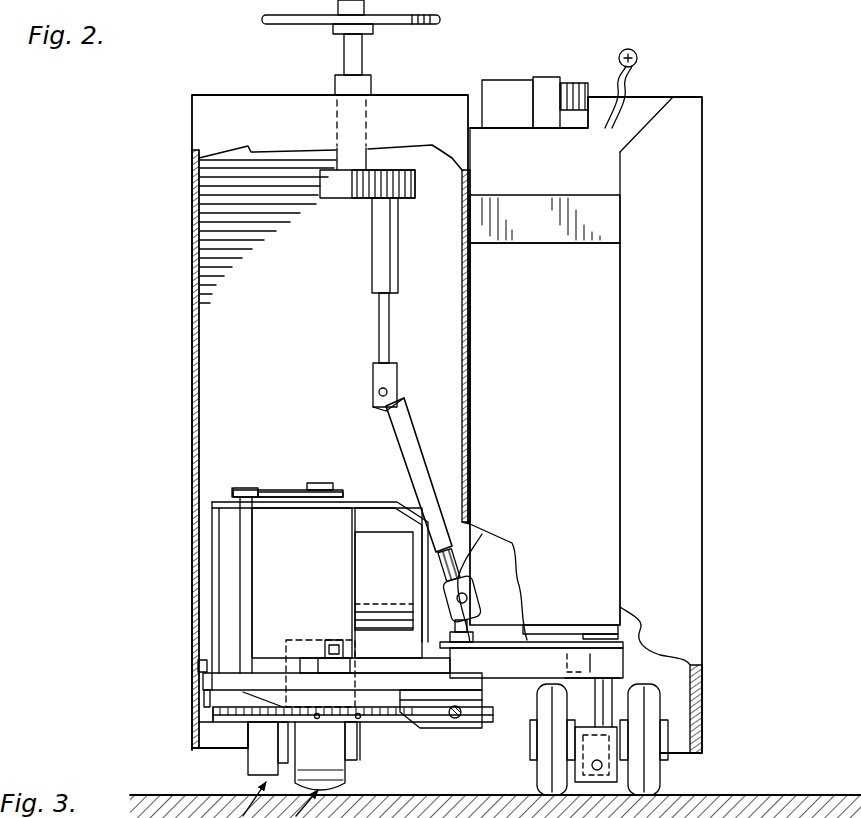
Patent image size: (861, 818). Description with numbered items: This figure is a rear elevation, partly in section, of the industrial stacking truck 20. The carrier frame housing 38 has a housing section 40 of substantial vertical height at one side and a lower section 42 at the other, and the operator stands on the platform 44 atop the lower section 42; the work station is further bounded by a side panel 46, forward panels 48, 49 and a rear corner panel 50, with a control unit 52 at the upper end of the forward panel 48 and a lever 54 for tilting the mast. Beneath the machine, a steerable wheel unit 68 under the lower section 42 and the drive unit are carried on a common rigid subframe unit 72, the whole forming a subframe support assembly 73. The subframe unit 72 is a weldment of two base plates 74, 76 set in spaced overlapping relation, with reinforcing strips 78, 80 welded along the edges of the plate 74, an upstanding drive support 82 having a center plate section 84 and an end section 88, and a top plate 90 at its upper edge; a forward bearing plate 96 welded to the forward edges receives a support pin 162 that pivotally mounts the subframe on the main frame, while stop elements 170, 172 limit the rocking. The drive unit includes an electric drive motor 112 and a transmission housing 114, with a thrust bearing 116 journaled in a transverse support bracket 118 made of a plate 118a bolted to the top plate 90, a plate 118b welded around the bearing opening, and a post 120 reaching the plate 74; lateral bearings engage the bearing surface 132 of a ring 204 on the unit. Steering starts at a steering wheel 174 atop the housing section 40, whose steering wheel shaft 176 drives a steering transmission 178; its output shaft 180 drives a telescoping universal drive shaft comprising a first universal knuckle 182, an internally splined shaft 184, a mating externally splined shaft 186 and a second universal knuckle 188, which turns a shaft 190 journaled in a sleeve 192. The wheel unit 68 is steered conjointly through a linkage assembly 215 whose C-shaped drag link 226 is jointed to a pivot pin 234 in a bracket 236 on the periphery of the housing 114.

The truck 20 is at (183, 149).
The carrier frame housing 38 is at (193, 636).
The housing section 40 is at (192, 560).
The lower section 42 is at (702, 700).
The platform 44 is at (530, 628).
The side panel 46 is at (703, 355).
The forward panel 48 is at (524, 243).
The forward panel 49 is at (575, 350).
The rear corner panel 50 is at (700, 420).
The control unit 52 is at (548, 78).
The lever 54 is at (636, 70).
The steerable wheel unit 68 is at (672, 772).
The subframe unit 72 is at (268, 672).
The subframe support assembly 73 is at (205, 726).
The base plate 74 is at (215, 676).
The base plate 76 is at (548, 640).
The reinforcing strip 78 is at (480, 722).
The reinforcing strip 80 is at (213, 712).
The drive support 82 is at (376, 528).
The center plate section 84 is at (212, 506).
The end section 88 is at (213, 537).
The top plate 90 is at (232, 492).
The forward bearing plate 96 is at (440, 648).
The electric drive motor 112 is at (392, 575).
The transmission housing 114 is at (308, 560).
The thrust bearing 116 is at (292, 489).
The transverse support bracket 118 is at (268, 486).
The plate 118a is at (318, 484).
The plate 118b is at (248, 489).
The post 120 is at (247, 585).
The bearing surface 132 is at (205, 683).
The support pin 162 is at (455, 732).
The stop element 170 is at (628, 612).
The stop element 172 is at (197, 657).
The steering wheel 174 is at (440, 20).
The steering wheel shaft 176 is at (364, 48).
The steering transmission 178 is at (364, 206).
The output shaft 180 is at (380, 316).
The first universal knuckle 182 is at (372, 388).
The internally splined shaft 184 is at (392, 412).
The externally splined shaft 186 is at (465, 545).
The second universal knuckle 188 is at (505, 542).
The shaft 190 is at (466, 608).
The sleeve 192 is at (470, 638).
The ring 204 is at (222, 724).
The linkage assembly 215 is at (392, 694).
The C-shaped drag link 226 is at (444, 664).
The pivot pin 234 is at (333, 640).
The bracket 236 is at (343, 640).